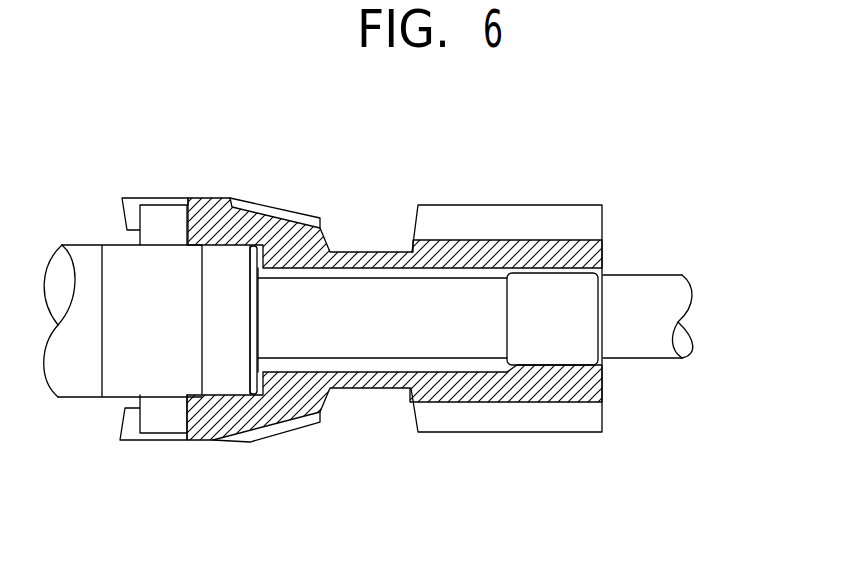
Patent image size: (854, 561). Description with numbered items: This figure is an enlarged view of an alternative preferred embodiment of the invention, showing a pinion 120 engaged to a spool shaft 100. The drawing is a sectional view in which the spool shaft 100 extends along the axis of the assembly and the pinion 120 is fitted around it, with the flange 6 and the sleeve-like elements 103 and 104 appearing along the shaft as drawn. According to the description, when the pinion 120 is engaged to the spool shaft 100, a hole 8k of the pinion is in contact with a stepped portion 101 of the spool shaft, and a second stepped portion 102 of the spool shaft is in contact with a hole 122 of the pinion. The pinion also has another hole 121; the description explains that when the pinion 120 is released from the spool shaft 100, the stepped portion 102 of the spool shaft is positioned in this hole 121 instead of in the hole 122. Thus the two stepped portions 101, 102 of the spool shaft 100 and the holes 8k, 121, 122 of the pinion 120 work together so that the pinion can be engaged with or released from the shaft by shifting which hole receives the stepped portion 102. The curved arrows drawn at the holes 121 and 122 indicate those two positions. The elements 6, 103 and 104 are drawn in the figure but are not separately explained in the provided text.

The spool shaft 100 is at (150, 325).
The stepped portion 101 is at (225, 285).
The stepped portion 102 is at (557, 345).
The tube 103 is at (375, 340).
The pipe 104 is at (657, 303).
The pinion 120 is at (245, 188).
The hole 121 is at (482, 267).
The hole 122 is at (565, 273).
The flange 6 is at (161, 413).
The hole 8k is at (228, 397).